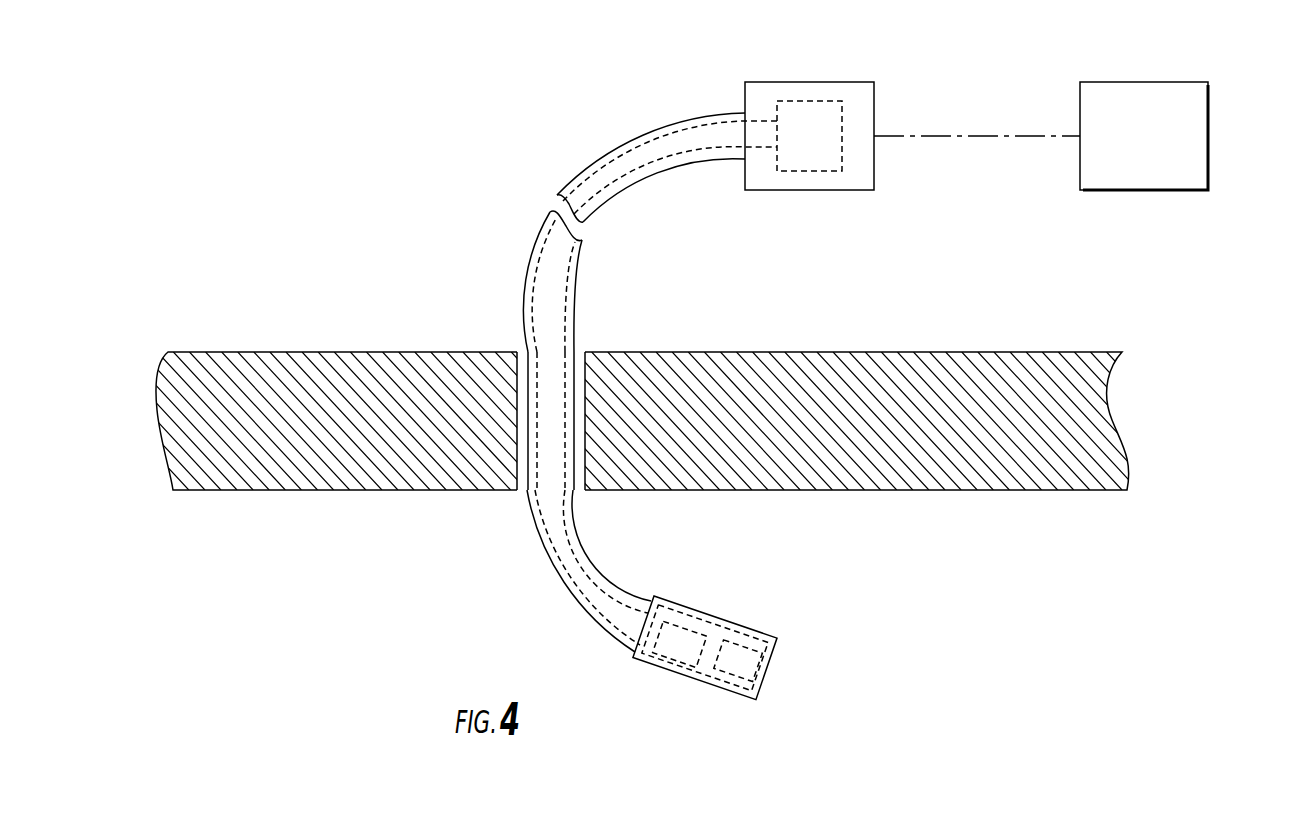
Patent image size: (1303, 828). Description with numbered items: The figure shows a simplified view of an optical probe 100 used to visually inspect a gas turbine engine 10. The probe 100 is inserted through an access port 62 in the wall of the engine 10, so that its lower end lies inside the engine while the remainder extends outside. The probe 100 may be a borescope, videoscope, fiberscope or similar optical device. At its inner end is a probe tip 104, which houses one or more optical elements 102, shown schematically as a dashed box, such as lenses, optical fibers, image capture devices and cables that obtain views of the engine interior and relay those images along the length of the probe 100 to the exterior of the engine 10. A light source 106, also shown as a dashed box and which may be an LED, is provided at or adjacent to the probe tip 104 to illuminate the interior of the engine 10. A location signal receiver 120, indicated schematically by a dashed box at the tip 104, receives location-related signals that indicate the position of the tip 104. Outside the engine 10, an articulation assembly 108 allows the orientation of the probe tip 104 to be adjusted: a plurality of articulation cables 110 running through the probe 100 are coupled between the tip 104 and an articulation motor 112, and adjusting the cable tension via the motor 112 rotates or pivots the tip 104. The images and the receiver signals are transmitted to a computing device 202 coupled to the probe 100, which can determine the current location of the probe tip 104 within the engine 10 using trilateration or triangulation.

The gas turbine engine 10 is at (225, 350).
The access port 62 is at (587, 377).
The optical probe 100 is at (395, 157).
The optical elements 102 is at (683, 673).
The probe tip 104 is at (747, 624).
The light source 106 is at (740, 690).
The articulation assembly 108 is at (735, 104).
The articulation cables 110 is at (603, 160).
The articulation motor 112 is at (797, 101).
The location signal receiver 120 is at (683, 622).
The computing device 202 is at (1163, 144).